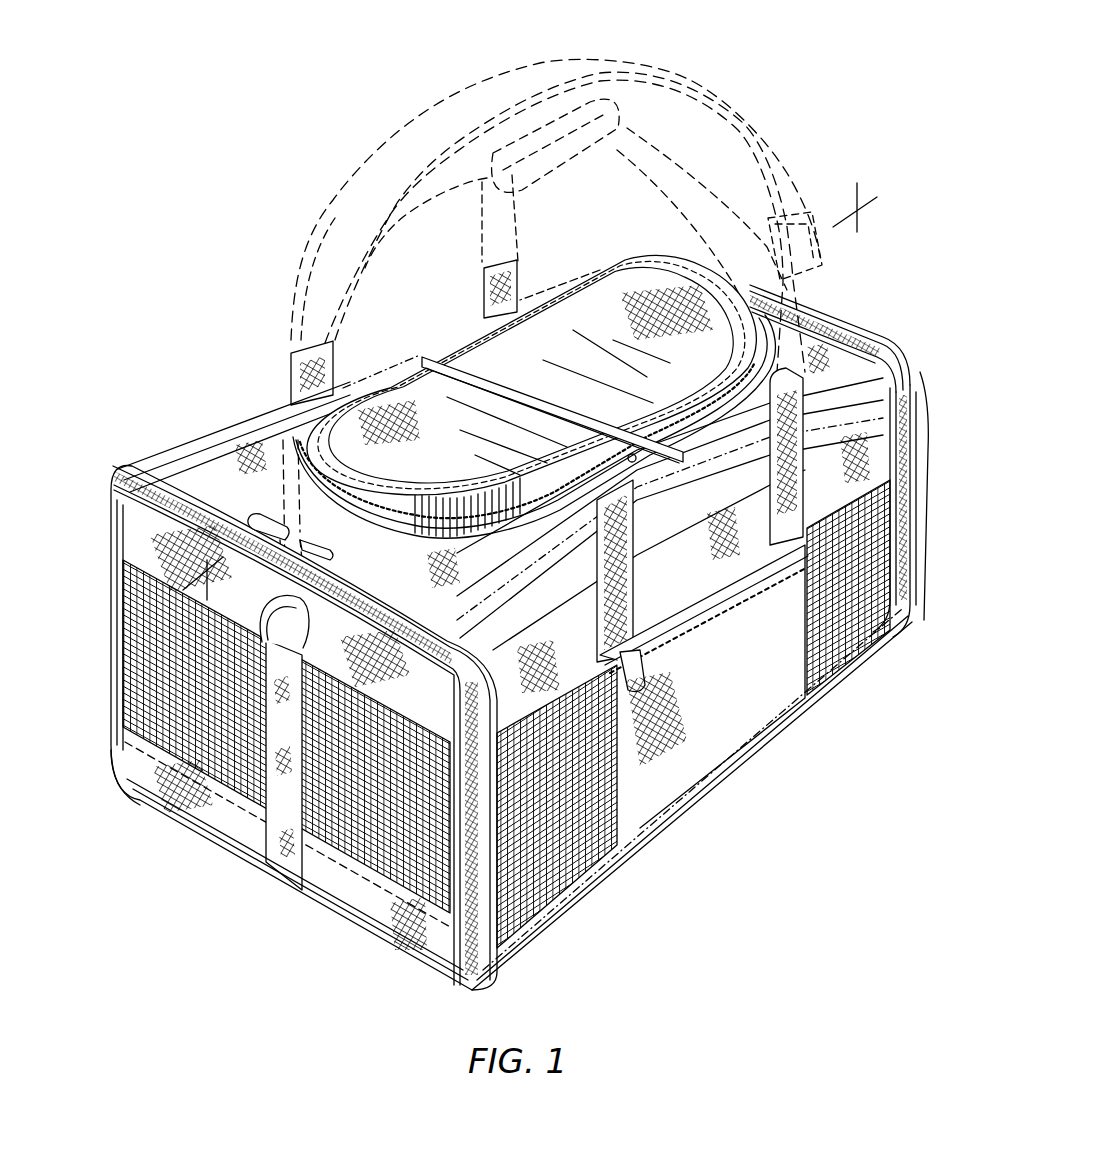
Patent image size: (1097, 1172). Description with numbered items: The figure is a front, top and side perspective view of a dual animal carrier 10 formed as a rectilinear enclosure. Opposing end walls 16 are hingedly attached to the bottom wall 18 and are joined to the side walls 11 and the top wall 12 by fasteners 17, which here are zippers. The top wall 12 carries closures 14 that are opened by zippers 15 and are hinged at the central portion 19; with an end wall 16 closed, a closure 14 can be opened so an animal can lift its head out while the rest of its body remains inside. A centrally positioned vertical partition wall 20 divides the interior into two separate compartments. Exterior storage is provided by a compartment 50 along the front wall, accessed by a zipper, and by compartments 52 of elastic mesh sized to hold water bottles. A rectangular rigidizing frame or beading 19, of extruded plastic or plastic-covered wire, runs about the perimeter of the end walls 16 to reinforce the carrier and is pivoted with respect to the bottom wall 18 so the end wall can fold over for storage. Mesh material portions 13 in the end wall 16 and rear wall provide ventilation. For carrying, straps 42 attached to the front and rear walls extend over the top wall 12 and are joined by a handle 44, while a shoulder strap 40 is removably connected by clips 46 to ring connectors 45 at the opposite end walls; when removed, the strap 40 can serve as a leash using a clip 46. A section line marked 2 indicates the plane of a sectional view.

The section line 2 is at (864, 216).
The carrier 10 is at (172, 285).
The side walls 11 is at (800, 488).
The top wall 12 is at (223, 460).
The mesh material portions 13 is at (233, 793).
The closures 14 is at (432, 468).
The zippers 15 is at (275, 515).
The end walls 16 is at (150, 520).
The fasteners 17 is at (150, 478).
The bottom wall 18 is at (650, 830).
The rigidizing frame or beading 19 is at (112, 700).
The partition wall 20 is at (503, 507).
The shoulder strap 40 is at (605, 52).
The straps 42 is at (648, 143).
The handle 44 is at (580, 162).
The ring connectors 45 is at (307, 633).
The clips 46 is at (813, 280).
The compartment 50 is at (710, 723).
The compartments 52 is at (563, 893).